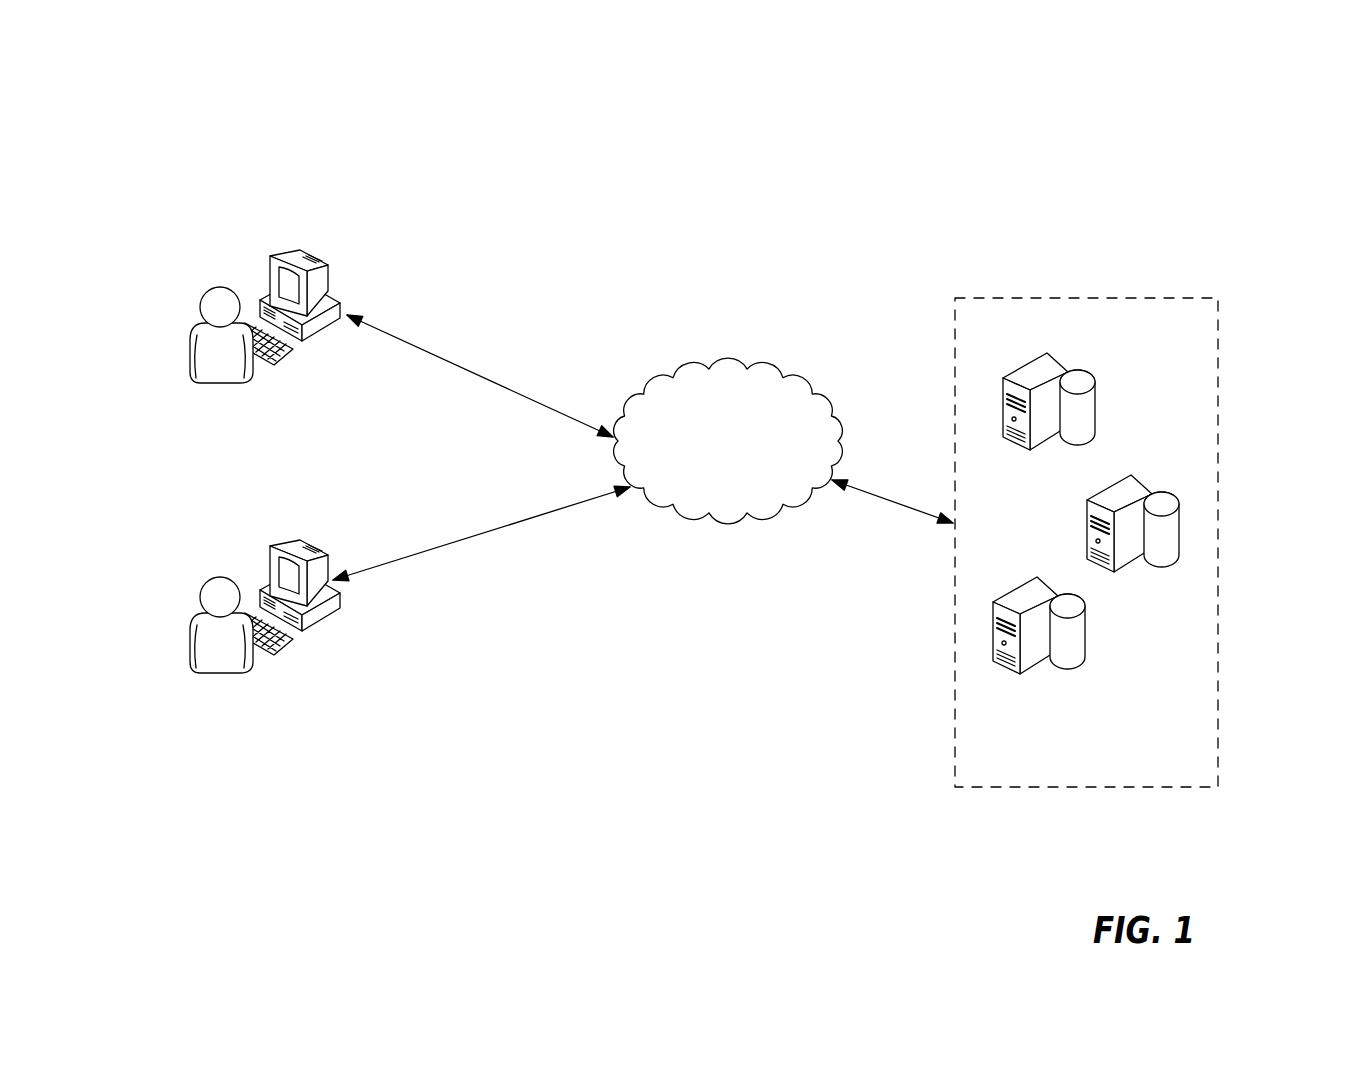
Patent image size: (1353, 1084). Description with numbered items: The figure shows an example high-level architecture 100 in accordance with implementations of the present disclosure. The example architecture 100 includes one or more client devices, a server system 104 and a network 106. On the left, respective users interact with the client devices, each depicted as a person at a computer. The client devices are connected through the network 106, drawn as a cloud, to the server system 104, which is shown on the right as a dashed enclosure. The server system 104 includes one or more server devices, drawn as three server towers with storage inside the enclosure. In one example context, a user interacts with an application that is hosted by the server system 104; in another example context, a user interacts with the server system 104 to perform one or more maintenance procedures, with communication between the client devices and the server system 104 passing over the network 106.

The architecture 100 is at (578, 127).
The server system 104 is at (1088, 297).
The network 106 is at (728, 368).